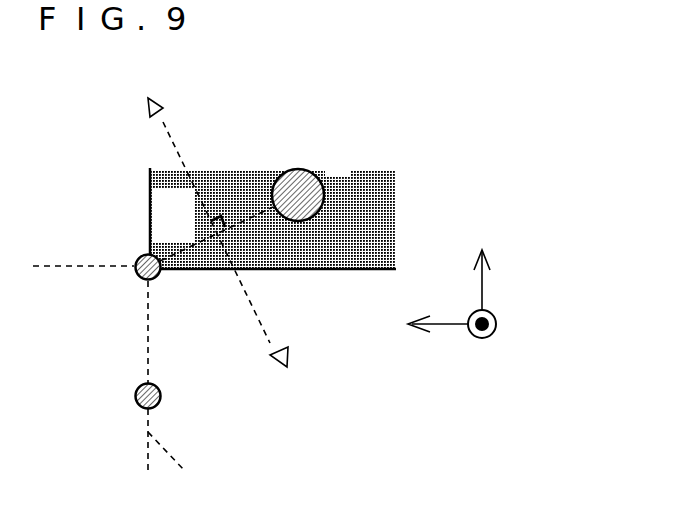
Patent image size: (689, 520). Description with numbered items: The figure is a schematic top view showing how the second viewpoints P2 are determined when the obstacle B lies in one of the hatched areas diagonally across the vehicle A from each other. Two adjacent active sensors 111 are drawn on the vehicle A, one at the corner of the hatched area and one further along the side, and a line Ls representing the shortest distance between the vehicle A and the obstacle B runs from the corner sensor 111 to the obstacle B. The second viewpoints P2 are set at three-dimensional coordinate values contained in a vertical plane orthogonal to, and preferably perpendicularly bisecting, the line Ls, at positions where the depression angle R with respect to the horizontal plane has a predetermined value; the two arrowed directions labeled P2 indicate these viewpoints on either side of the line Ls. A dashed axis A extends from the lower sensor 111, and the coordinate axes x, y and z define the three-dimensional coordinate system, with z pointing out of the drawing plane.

The adjacent active sensor 111 is at (139, 278).
The obstacle B is at (309, 182).
The vehicle A is at (177, 470).
The second viewpoint P2 is at (357, 243).
The line representing shortest distance Ls is at (216, 234).
The x axis x is at (427, 325).
The y axis y is at (482, 267).
The z axis z is at (492, 324).